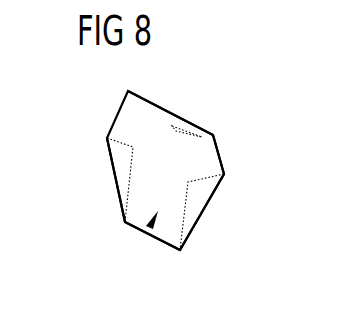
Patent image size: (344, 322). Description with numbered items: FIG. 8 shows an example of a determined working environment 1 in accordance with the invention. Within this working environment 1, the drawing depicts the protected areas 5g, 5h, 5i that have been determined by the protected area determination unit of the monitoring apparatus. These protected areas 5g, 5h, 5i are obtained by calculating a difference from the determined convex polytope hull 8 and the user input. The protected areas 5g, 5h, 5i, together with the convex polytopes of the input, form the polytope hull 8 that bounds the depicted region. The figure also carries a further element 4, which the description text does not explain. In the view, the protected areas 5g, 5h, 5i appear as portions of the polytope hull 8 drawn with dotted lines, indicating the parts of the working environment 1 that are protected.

The working environment 1 is at (203, 257).
The cutting edge 4 is at (143, 228).
The protected area 5g is at (186, 124).
The protected area 5h is at (199, 207).
The protected area 5i is at (121, 172).
The convex polytope hull 8 is at (219, 153).